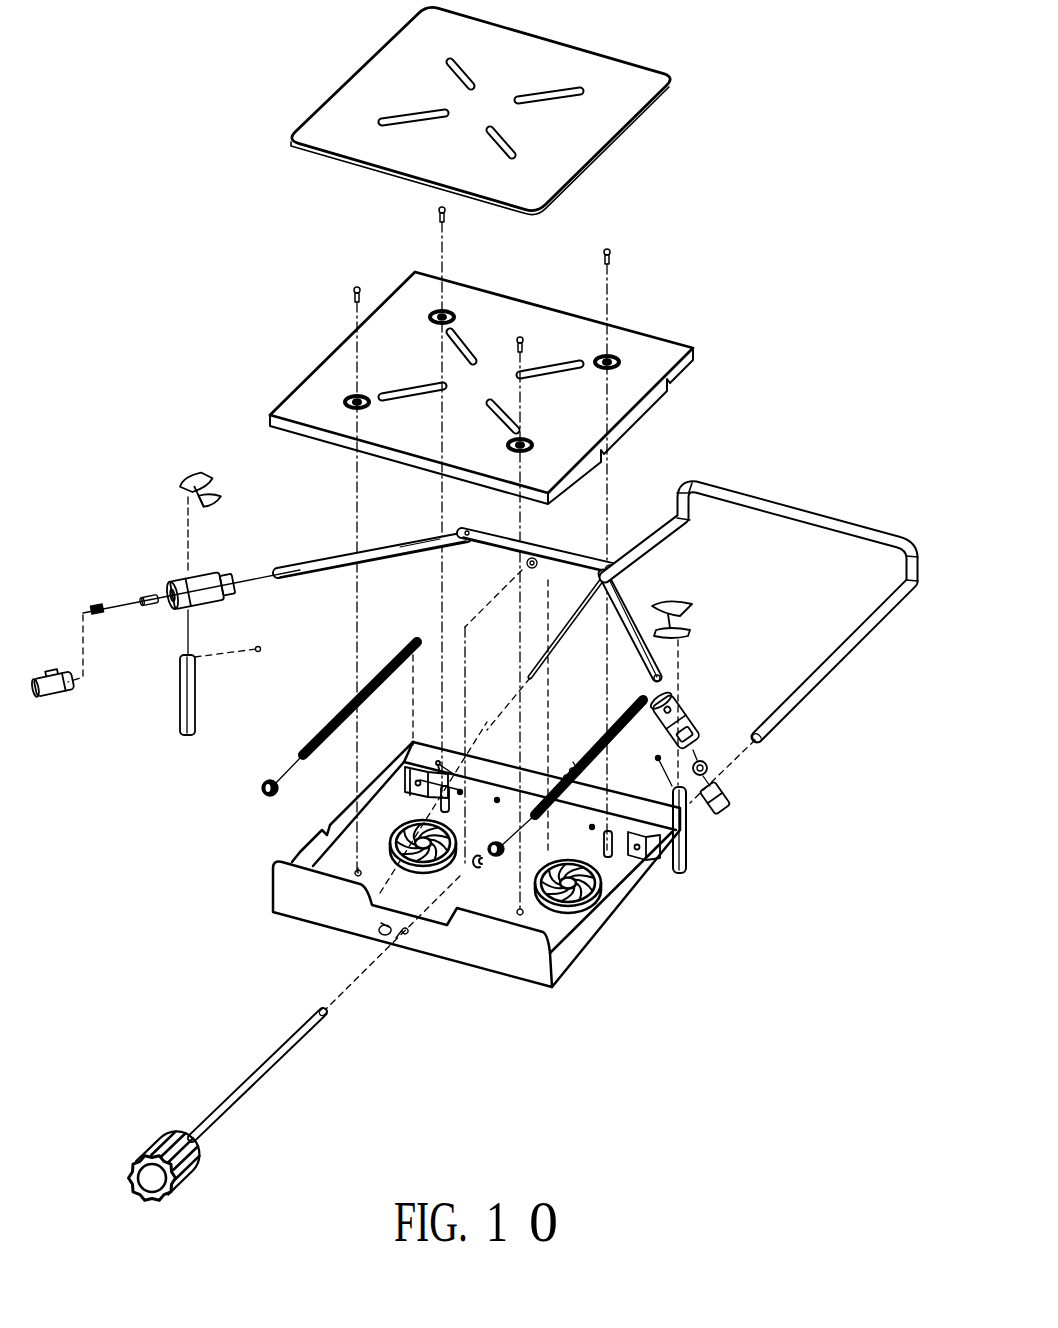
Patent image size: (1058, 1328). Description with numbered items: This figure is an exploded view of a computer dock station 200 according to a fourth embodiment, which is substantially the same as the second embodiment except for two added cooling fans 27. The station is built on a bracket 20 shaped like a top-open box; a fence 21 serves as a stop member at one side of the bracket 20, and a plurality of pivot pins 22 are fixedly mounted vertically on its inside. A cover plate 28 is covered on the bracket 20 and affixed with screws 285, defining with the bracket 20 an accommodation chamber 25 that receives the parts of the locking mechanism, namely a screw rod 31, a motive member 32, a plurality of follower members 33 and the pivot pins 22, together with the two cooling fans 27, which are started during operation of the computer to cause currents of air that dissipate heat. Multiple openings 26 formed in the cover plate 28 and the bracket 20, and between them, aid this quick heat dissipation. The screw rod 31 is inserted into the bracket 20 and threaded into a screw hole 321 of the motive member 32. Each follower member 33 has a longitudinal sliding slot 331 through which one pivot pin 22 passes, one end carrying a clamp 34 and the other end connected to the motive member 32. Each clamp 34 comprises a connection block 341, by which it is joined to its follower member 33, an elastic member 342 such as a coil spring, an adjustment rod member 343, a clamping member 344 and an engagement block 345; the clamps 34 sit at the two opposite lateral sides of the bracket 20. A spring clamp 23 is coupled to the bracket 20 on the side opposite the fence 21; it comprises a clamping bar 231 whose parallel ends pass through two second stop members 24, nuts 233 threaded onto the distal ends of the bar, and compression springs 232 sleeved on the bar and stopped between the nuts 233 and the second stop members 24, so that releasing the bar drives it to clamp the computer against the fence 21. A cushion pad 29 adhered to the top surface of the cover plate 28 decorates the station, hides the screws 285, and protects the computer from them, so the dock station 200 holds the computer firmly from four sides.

The computer dock station 200 is at (177, 36).
The cushion pad 29 is at (352, 70).
The openings 26 is at (550, 104).
The screws 285 is at (613, 253).
The cover plate 28 is at (320, 354).
The follower members 33 is at (303, 567).
The longitudinal sliding slot 331 is at (437, 538).
The motive member 32 is at (580, 532).
The screw hole 321 is at (537, 553).
The clamps 34 is at (177, 417).
The connection block 341 is at (180, 577).
The elastic member 342 is at (97, 605).
The adjustment rod member 343 is at (180, 693).
The clamping member 344 is at (180, 470).
The engagement block 345 is at (53, 673).
The spring clamp 23 is at (818, 797).
The clamping bar 231 is at (783, 723).
The compression springs 232 is at (640, 890).
The nuts 233 is at (655, 900).
The bracket 20 is at (313, 833).
The fence 21 is at (308, 907).
The pivot pins 22 is at (440, 812).
The second stop members 24 is at (413, 802).
The accommodation chamber 25 is at (583, 920).
The cooling fans 27 is at (403, 867).
The screw rod 31 is at (253, 1073).